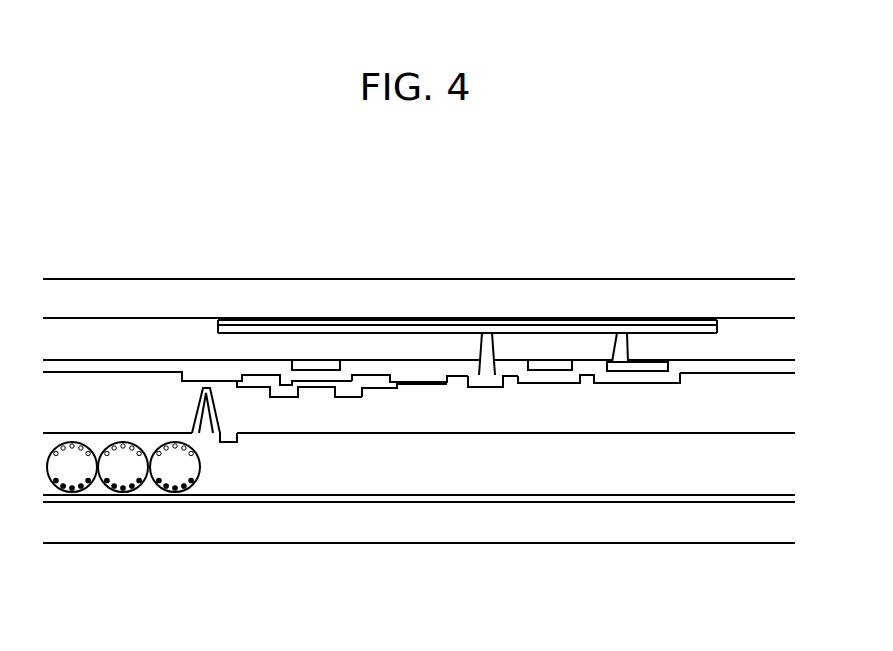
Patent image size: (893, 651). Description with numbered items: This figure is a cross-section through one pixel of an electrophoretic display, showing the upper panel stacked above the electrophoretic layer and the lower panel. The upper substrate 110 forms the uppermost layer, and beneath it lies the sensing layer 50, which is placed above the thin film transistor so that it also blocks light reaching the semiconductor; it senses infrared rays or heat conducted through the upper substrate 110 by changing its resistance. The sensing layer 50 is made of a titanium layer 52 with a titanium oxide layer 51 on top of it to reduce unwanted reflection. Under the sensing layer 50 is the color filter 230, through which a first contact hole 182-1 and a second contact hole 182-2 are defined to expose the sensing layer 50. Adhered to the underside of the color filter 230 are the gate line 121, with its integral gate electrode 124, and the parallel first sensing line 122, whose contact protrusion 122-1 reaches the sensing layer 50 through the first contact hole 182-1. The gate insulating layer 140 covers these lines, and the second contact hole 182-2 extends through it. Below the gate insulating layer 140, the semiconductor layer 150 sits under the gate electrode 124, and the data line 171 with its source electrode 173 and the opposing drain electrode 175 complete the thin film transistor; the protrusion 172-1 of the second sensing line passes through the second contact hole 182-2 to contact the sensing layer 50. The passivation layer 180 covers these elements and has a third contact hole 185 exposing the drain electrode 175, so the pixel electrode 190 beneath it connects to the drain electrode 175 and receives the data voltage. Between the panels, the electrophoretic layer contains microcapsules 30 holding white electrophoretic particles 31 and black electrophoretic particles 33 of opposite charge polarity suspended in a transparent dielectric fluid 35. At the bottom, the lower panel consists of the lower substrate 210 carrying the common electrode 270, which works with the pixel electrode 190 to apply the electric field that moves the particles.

The upper substrate 110 is at (137, 292).
The color filter 230 is at (80, 338).
The sensing layer 50 is at (597, 232).
The titanium oxide layer 51 is at (590, 322).
The titanium layer 52 is at (558, 328).
The gate insulating layer 140 is at (747, 367).
The gate electrode 124 is at (313, 367).
The gate line 121 is at (543, 367).
The third contact hole 185 is at (222, 408).
The drain electrode 175 is at (288, 392).
The semiconductor layer 150 is at (372, 377).
The source electrode 173 is at (350, 393).
The data line 171 is at (423, 377).
The protrusion 172-1 is at (489, 377).
The second contact hole 182-2 is at (478, 348).
The first contact hole 182-1 is at (628, 348).
The first sensing line 122 is at (657, 368).
The contact protrusion 122-1 is at (618, 368).
The passivation layer 180 is at (548, 417).
The pixel electrode 190 is at (228, 437).
The microcapsule 30 is at (119, 533).
The electrophoretic particle 31 is at (50, 452).
The electrophoretic particle 33 is at (92, 483).
The transparent dielectric fluid 35 is at (68, 470).
The common electrode 270 is at (770, 505).
The lower substrate 210 is at (722, 524).